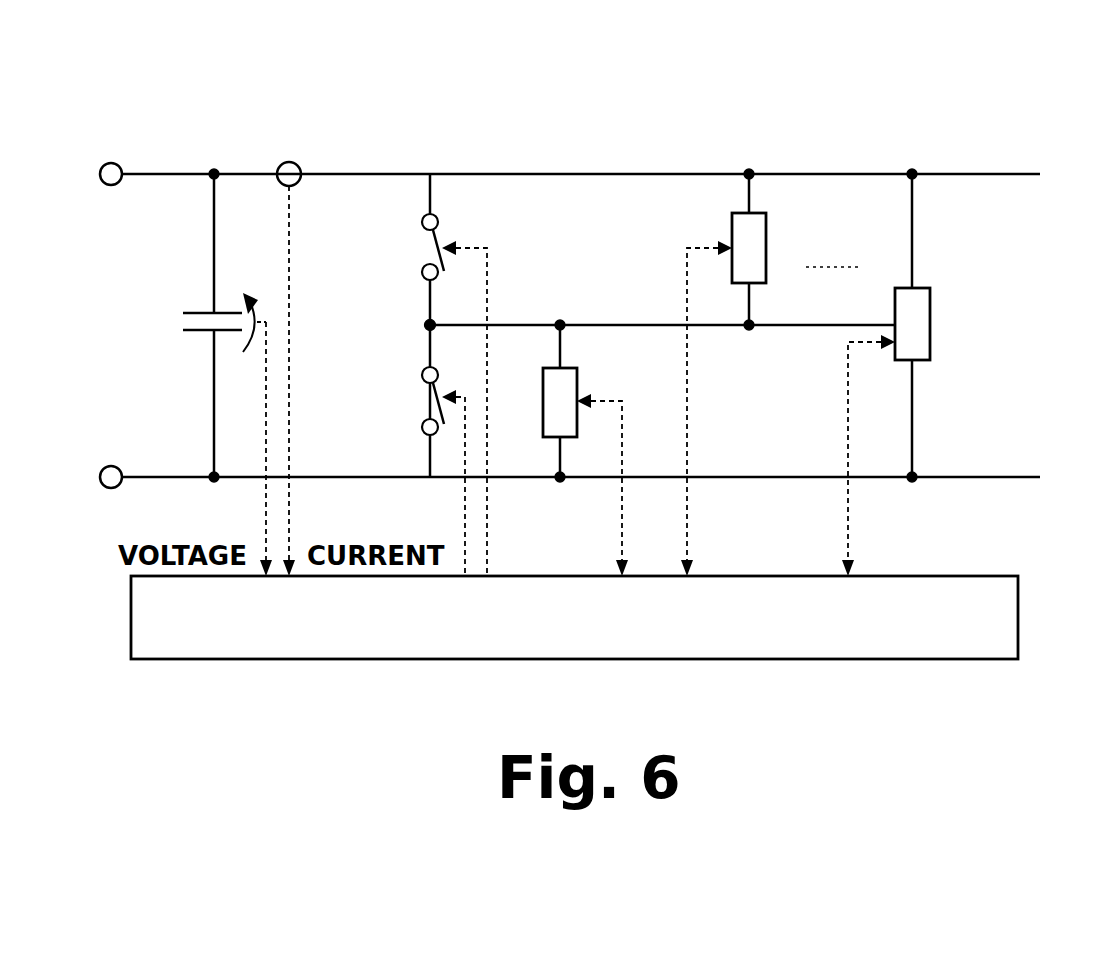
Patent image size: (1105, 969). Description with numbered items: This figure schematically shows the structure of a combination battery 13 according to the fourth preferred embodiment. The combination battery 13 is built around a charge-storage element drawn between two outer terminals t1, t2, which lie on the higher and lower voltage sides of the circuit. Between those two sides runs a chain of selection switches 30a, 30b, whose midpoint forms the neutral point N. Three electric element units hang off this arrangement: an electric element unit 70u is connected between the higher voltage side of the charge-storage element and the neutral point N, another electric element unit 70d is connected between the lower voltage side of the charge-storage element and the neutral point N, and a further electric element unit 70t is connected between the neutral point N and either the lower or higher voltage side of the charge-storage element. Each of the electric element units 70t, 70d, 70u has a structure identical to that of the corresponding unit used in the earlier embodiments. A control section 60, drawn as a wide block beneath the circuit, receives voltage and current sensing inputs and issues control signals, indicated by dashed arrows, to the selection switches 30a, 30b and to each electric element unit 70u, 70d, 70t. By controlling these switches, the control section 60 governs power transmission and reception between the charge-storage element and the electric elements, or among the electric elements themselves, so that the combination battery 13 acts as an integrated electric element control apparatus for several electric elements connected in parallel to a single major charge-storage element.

The combination battery 13 is at (398, 294).
The selection switch 30a is at (408, 250).
The selection switch 30b is at (408, 396).
The neutral point N is at (427, 324).
The electric element unit 70u is at (766, 232).
The electric element unit 70d is at (577, 380).
The electric element unit 70t is at (930, 320).
The control section 60 is at (1018, 617).
The first terminal t1 is at (112, 162).
The second terminal t2 is at (112, 465).